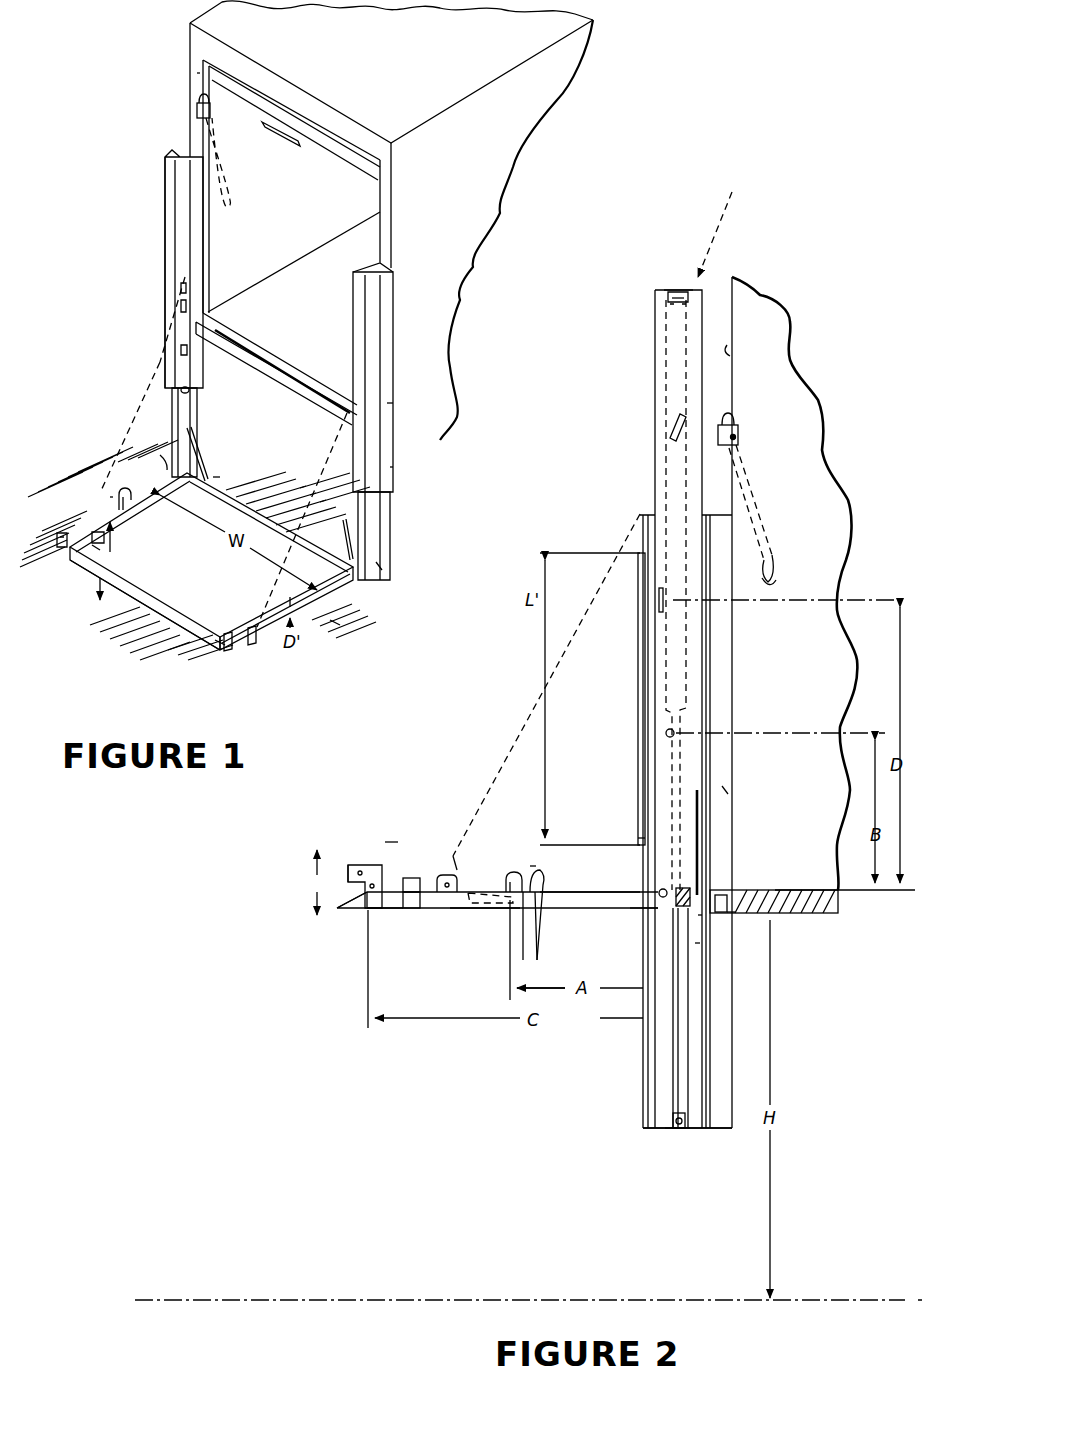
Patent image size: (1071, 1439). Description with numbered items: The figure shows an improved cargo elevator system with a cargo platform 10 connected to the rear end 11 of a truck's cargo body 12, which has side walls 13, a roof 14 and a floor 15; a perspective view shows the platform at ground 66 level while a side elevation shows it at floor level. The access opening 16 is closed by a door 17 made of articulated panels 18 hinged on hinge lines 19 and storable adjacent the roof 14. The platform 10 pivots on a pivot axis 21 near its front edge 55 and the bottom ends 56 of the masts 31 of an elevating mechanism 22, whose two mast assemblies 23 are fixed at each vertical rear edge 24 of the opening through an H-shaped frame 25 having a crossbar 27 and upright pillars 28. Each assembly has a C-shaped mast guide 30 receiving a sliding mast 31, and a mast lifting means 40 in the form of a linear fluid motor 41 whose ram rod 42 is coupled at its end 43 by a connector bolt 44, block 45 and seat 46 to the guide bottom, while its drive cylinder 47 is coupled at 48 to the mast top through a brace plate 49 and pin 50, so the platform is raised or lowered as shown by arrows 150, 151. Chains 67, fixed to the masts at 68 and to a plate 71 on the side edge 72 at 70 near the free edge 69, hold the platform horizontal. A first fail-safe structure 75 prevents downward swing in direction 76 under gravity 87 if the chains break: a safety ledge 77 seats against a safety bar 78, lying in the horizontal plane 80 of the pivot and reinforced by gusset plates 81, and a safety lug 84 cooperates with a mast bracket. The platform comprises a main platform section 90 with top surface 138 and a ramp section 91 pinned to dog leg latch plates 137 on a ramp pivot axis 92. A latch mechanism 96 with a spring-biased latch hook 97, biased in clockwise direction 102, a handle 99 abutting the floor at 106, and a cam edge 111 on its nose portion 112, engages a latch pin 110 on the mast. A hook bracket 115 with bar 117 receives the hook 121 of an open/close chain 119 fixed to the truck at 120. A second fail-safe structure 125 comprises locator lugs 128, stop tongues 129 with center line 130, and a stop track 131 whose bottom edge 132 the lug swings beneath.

In FIG. 1, the cargo platform 10 is at (145, 635).
In FIG. 2, the cargo platform 10 is at (333, 960).
In FIG. 1, the rear end 11 is at (405, 322).
In FIG. 2, the rear end 11 is at (740, 267).
In FIG. 1, the cargo body 12 is at (525, 211).
In FIG. 2, the cargo body 12 is at (850, 497).
In FIG. 1, the side walls 13 is at (326, 205).
In FIG. 1, the roof 14 is at (464, 60).
In FIG. 1, the floor 15 is at (320, 315).
In FIG. 1, the access opening 16 is at (380, 227).
In FIG. 2, the access opening 16 is at (790, 920).
In FIG. 1, the door 17 is at (325, 163).
In FIG. 1, the articulated panels 18 is at (320, 150).
In FIG. 1, the hinge lines 19 is at (350, 160).
In FIG. 2, the pivot axis 21 is at (660, 890).
In FIG. 1, the elevating mechanism 22 is at (125, 313).
In FIG. 2, the elevating mechanism 22 is at (687, 257).
In FIG. 1, the mast assemblies 23 is at (165, 250).
In FIG. 2, the mast assemblies 23 is at (655, 405).
In FIG. 1, the vertical rear edge 24 is at (197, 73).
In FIG. 2, the vertical rear edge 24 is at (731, 355).
In FIG. 1, the H-shaped frame 25 is at (387, 403).
In FIG. 2, the H-shaped frame 25 is at (725, 790).
In FIG. 1, the crossbar 27 is at (283, 392).
In FIG. 2, the crossbar 27 is at (727, 912).
In FIG. 1, the upright pillars 28 is at (390, 467).
In FIG. 2, the upright pillars 28 is at (728, 706).
In FIG. 1, the mast guide 30 is at (165, 272).
In FIG. 2, the mast guide 30 is at (642, 516).
In FIG. 1, the mast 31 is at (185, 278).
In FIG. 2, the mast 31 is at (660, 472).
In FIG. 2, the mast lifting means 40 is at (715, 224).
In FIG. 2, the linear fluid motor 41 is at (664, 372).
In FIG. 2, the ram rod 42 is at (670, 1060).
In FIG. 2, the rod end coupling 43 is at (668, 1133).
In FIG. 2, the connector bolt 44 is at (678, 1128).
In FIG. 2, the block 45 is at (645, 1128).
In FIG. 2, the seat 46 is at (690, 1128).
In FIG. 2, the drive cylinder 47 is at (664, 342).
In FIG. 2, the cylinder coupling 48 is at (655, 277).
In FIG. 2, the brace plate 49 is at (666, 308).
In FIG. 2, the pin 50 is at (664, 292).
In FIG. 1, the front edge 55 is at (285, 517).
In FIG. 1, the bottom ends 56 is at (167, 470).
In FIG. 2, the bottom ends 56 is at (690, 888).
In FIG. 1, the ground 66 is at (337, 623).
In FIG. 2, the ground 66 is at (864, 1292).
In FIG. 1, the chains 67 is at (133, 420).
In FIG. 2, the chains 67 is at (512, 710).
In FIG. 1, the chain inner end fixing 68 is at (195, 302).
In FIG. 2, the chain inner end fixing 68 is at (668, 427).
In FIG. 1, the free edge 69 is at (150, 590).
In FIG. 2, the free edge 69 is at (375, 913).
In FIG. 1, the chain outer end connection 70 is at (247, 647).
In FIG. 2, the chain outer end connection 70 is at (422, 873).
In FIG. 1, the plate 71 is at (263, 643).
In FIG. 2, the plate 71 is at (412, 910).
In FIG. 1, the side edge 72 is at (148, 498).
In FIG. 2, the side edge 72 is at (565, 903).
In FIG. 1, the first fail-safe structure 75 is at (247, 443).
In FIG. 2, the first fail-safe structure 75 is at (695, 943).
In FIG. 2, the downward swing direction arrow 76 is at (485, 972).
In FIG. 2, the safety ledge 77 is at (698, 915).
In FIG. 2, the safety bar 78 is at (727, 895).
In FIG. 2, the horizontal plane 80 is at (862, 902).
In FIG. 1, the gusset plates 81 is at (197, 437).
In FIG. 2, the gusset plates 81 is at (700, 820).
In FIG. 2, the safety lug 84 is at (648, 898).
In FIG. 2, the gravitational force arrow 87 is at (392, 837).
In FIG. 1, the main platform section 90 is at (242, 595).
In FIG. 2, the main platform section 90 is at (577, 887).
In FIG. 1, the ramp section 91 is at (177, 637).
In FIG. 2, the ramp section 91 is at (357, 905).
In FIG. 2, the ramp pivot axis 92 is at (382, 863).
In FIG. 1, the latch mechanism 96 is at (110, 497).
In FIG. 2, the latch mechanism 96 is at (523, 867).
In FIG. 1, the latch hook 97 is at (140, 472).
In FIG. 2, the latch hook 97 is at (512, 872).
In FIG. 2, the handle 99 is at (473, 912).
In FIG. 2, the clockwise direction 102 is at (533, 863).
In FIG. 2, the handle abutment 106 is at (450, 873).
In FIG. 1, the latch pin 110 is at (190, 403).
In FIG. 2, the latch pin 110 is at (666, 735).
In FIG. 2, the cam edge 111 is at (528, 935).
In FIG. 2, the nose portion 112 is at (557, 935).
In FIG. 1, the hook bracket 115 is at (95, 552).
In FIG. 2, the hook bracket 115 is at (463, 867).
In FIG. 2, the bar 117 is at (443, 868).
In FIG. 1, the open/close chain 119 is at (192, 135).
In FIG. 2, the open/close chain 119 is at (760, 483).
In FIG. 1, the chain fixed end 120 is at (190, 117).
In FIG. 2, the chain fixed end 120 is at (740, 448).
In FIG. 1, the hook 121 is at (193, 103).
In FIG. 2, the hook 121 is at (735, 418).
In FIG. 1, the second fail-safe structure 125 is at (165, 325).
In FIG. 1, the locator lug 128 is at (227, 650).
In FIG. 2, the locator lug 128 is at (367, 907).
In FIG. 1, the stop tongue 129 is at (160, 360).
In FIG. 2, the stop tongue 129 is at (658, 608).
In FIG. 2, the center line 130 is at (780, 604).
In FIG. 2, the stop track 131 is at (638, 770).
In FIG. 2, the bottom edge 132 is at (635, 845).
In FIG. 1, the dog leg latch plate 137 is at (62, 530).
In FIG. 2, the dog leg latch plate 137 is at (355, 862).
In FIG. 1, the top surface 138 is at (162, 564).
In FIG. 1, the raising arrow 150 is at (121, 531).
In FIG. 2, the raising arrow 150 is at (305, 870).
In FIG. 1, the lowering arrow 151 is at (75, 606).
In FIG. 2, the lowering arrow 151 is at (305, 908).